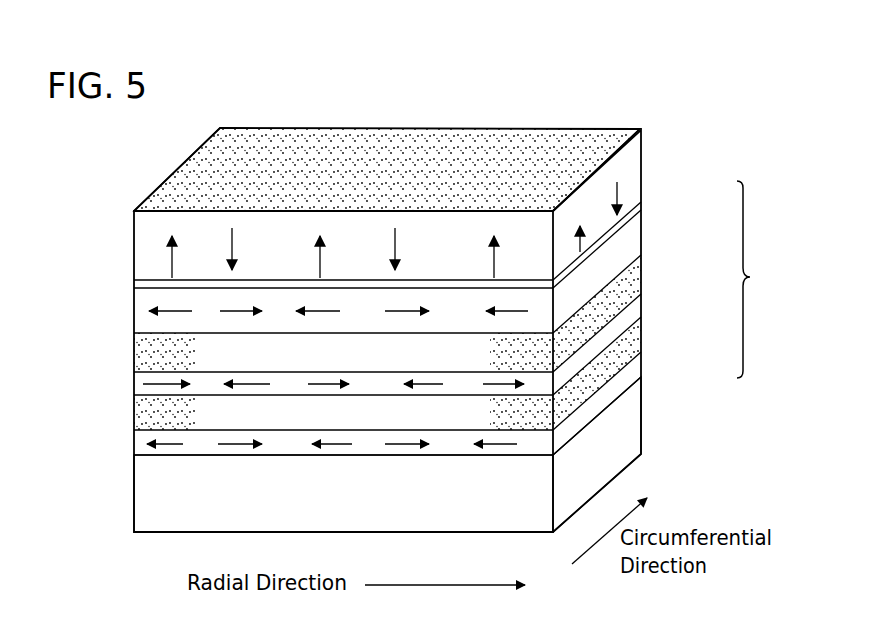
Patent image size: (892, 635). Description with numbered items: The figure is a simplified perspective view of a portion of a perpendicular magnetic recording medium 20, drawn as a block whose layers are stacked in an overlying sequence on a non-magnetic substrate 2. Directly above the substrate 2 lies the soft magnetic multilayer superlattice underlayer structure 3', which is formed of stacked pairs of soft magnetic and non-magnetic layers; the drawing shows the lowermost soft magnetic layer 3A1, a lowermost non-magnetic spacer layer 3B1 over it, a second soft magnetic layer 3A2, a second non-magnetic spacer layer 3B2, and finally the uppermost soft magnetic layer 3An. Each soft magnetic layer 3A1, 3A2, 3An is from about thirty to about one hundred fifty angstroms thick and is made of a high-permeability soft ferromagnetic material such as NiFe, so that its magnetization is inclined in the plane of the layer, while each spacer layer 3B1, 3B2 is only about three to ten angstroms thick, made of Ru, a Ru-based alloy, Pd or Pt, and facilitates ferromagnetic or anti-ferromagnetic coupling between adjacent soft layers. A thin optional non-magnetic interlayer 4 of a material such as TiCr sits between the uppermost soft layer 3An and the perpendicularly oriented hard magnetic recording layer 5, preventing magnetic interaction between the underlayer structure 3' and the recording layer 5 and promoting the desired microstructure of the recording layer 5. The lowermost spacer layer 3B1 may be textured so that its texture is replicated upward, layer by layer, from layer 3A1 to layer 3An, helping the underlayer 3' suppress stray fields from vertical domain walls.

The perpendicular magnetic recording medium 20 is at (612, 88).
The hard magnetic recording layer 5 is at (354, 181).
The non-magnetic interlayer 4 is at (645, 204).
The uppermost soft magnetic layer 3An is at (645, 240).
The second non-magnetic spacer layer 3B2 is at (645, 274).
The second soft magnetic layer 3A2 is at (645, 305).
The lowermost non-magnetic spacer layer 3B1 is at (645, 336).
The lowermost soft magnetic layer 3A1 is at (645, 368).
The soft magnetic multilayer superlattice underlayer structure 3' is at (757, 279).
The non-magnetic substrate 2 is at (290, 511).